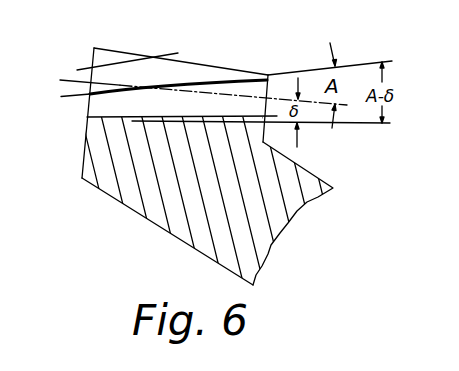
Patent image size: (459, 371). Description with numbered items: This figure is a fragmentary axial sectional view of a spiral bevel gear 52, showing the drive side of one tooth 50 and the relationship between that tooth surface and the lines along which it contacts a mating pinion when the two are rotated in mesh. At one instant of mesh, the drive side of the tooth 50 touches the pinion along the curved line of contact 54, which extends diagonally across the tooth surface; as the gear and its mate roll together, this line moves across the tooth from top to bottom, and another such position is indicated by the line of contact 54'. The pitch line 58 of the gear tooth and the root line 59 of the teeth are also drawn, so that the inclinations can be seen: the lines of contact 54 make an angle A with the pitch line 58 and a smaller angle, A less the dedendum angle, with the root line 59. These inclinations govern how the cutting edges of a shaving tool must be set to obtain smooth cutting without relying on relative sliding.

The tooth 50 is at (202, 72).
The spiral bevel gear 52 is at (132, 197).
The line of contact 54 is at (143, 109).
The line of contact 54' is at (127, 43).
The pitch line 58 is at (67, 78).
The root line 59 is at (363, 124).